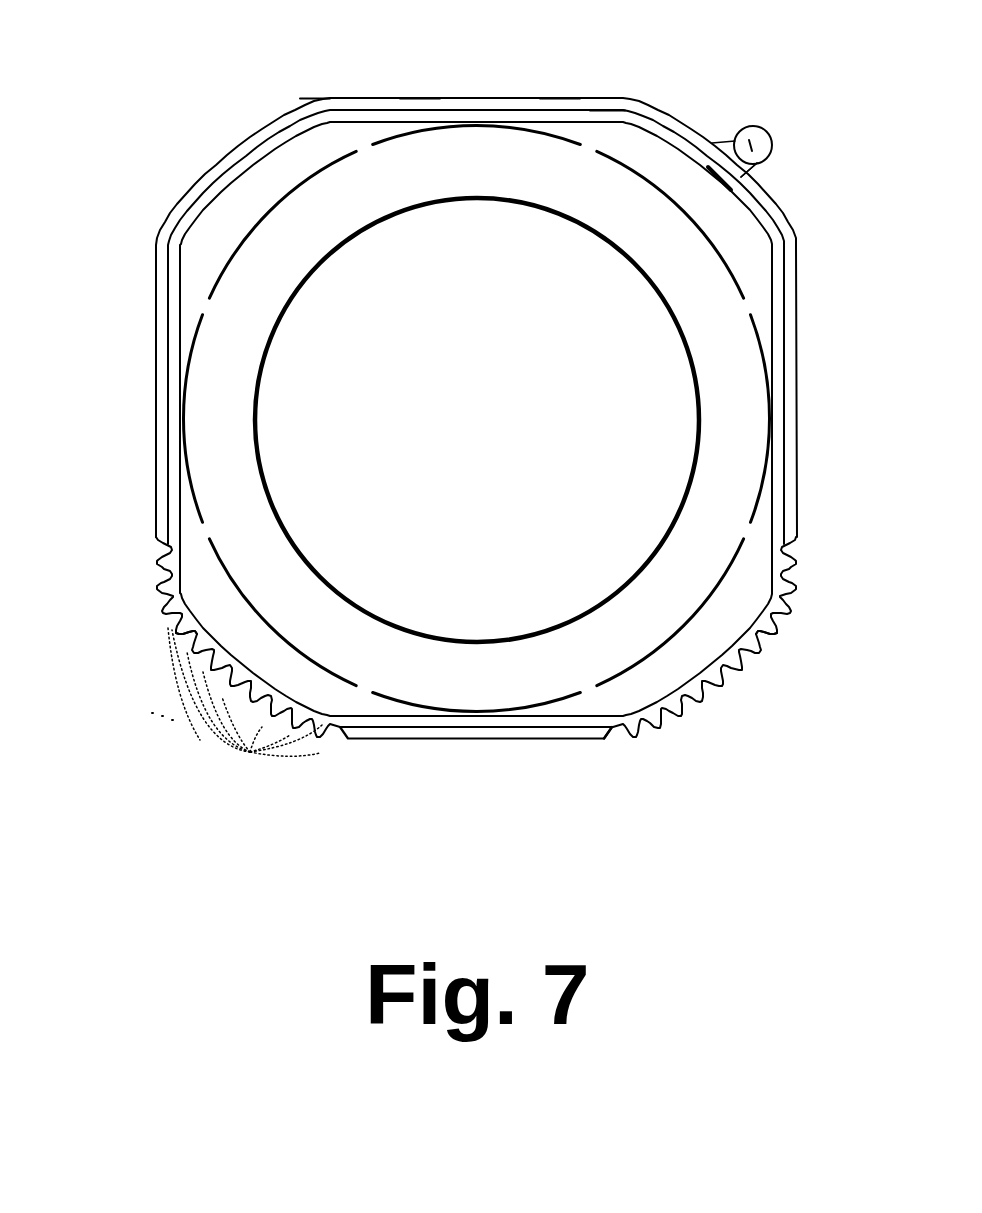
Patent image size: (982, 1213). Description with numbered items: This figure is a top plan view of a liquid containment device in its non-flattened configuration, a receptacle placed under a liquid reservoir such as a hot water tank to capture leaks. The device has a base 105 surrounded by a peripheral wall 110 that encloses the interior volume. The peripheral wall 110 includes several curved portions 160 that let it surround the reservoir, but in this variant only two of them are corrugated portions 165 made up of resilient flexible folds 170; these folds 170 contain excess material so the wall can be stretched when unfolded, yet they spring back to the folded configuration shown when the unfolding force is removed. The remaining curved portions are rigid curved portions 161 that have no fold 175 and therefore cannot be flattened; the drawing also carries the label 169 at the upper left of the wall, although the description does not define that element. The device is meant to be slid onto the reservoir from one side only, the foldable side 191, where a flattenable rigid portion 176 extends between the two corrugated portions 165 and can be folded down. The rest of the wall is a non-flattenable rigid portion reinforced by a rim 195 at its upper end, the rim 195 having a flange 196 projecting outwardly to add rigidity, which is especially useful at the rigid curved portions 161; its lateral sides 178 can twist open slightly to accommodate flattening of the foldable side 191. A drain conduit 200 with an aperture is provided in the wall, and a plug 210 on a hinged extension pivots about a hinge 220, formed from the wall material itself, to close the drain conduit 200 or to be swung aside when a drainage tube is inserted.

The base 105 is at (657, 415).
The peripheral wall 110 is at (783, 445).
The curved portion 160 is at (686, 120).
The rigid curved portion 161 is at (305, 103).
The corrugated portion 165 is at (140, 632).
The outer wall 169 is at (275, 107).
The resilient flexible fold 170 is at (237, 704).
The fold 175 is at (414, 112).
The flattenable rigid portion 176 is at (580, 742).
The lateral side 178 is at (172, 385).
The foldable side 191 is at (583, 743).
The rim 195 is at (563, 108).
The flange 196 is at (607, 112).
The drain conduit 200 is at (711, 181).
The plug 210 is at (772, 124).
The hinge 220 is at (757, 177).